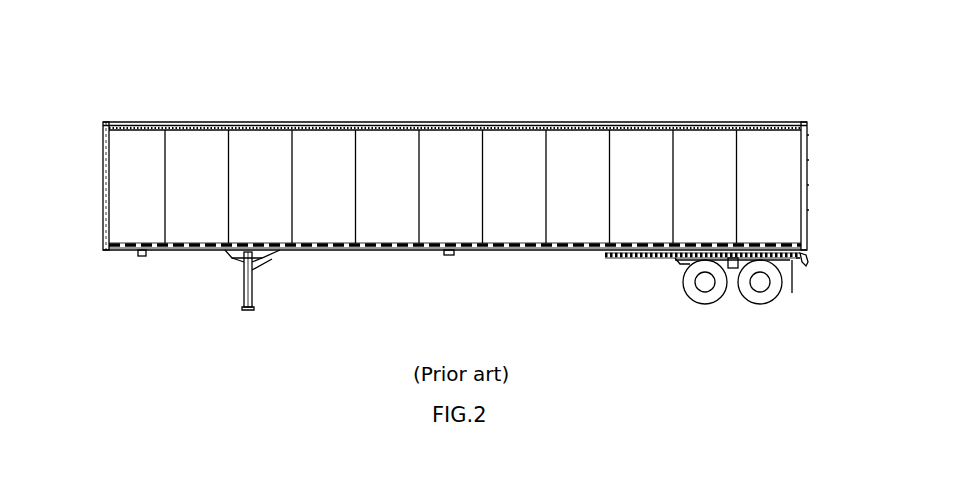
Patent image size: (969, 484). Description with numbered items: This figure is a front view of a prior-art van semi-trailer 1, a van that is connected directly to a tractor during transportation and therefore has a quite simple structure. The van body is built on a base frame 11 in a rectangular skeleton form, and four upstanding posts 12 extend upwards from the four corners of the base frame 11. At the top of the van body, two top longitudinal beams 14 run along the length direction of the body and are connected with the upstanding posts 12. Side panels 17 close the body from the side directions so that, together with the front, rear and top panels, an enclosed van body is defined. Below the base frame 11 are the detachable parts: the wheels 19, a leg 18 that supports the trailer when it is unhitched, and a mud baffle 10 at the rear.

The trailer 1 is at (464, 178).
The mud baffle 10 is at (810, 268).
The base frame 11 is at (313, 248).
The upstanding posts 12 is at (105, 182).
The top longitudinal beams 14 is at (513, 126).
The side panels 17 is at (447, 138).
The leg 18 is at (247, 295).
The wheels 19 is at (702, 297).